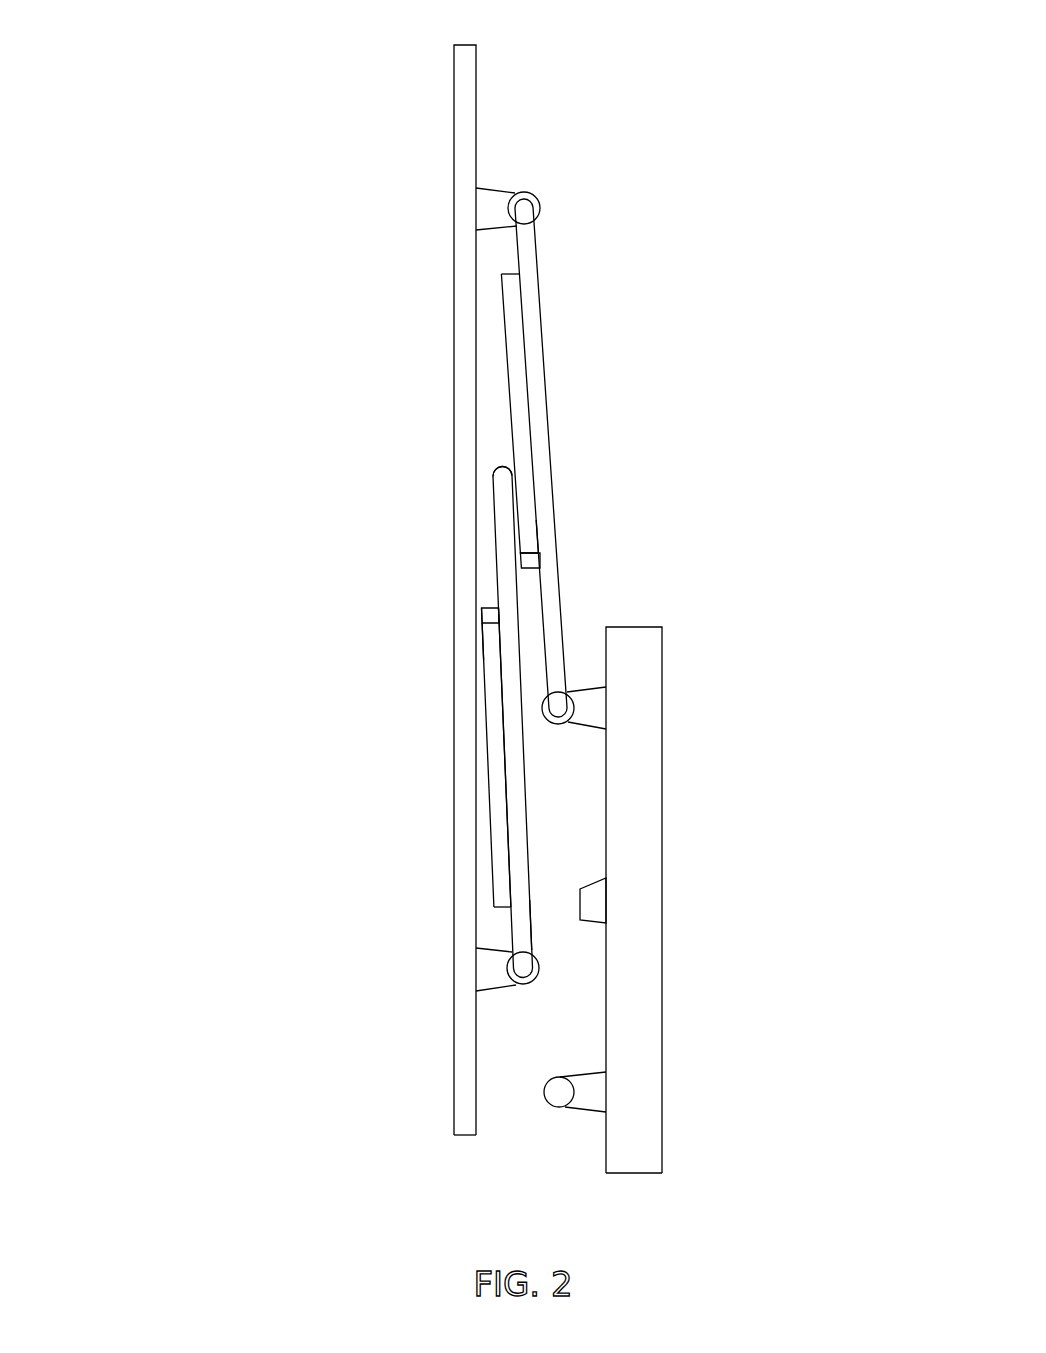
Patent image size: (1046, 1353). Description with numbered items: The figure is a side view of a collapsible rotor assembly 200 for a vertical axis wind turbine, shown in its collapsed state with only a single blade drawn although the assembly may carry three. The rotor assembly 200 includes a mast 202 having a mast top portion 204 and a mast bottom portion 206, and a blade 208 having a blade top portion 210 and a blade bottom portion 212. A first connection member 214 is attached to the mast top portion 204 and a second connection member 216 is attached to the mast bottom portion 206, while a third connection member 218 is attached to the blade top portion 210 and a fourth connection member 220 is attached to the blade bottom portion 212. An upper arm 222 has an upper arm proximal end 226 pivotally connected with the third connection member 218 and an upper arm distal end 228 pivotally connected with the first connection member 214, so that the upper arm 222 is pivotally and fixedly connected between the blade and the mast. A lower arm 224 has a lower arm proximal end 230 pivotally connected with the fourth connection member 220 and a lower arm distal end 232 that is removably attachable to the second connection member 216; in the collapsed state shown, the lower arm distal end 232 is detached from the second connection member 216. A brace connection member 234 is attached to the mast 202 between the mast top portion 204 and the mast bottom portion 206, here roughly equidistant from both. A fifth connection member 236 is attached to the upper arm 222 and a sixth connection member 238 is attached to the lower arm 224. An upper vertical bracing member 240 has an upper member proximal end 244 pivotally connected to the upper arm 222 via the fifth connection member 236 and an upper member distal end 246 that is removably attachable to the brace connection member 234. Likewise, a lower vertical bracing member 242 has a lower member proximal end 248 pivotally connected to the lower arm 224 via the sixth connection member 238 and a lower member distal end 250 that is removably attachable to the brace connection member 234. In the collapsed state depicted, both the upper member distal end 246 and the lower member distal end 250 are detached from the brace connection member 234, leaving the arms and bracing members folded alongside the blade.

The collapsible rotor assembly 200 is at (236, 50).
The mast 202 is at (675, 995).
The mast top portion 204 is at (653, 657).
The mast bottom portion 206 is at (637, 1135).
The blade 208 is at (436, 220).
The blade top portion 210 is at (465, 126).
The blade bottom portion 212 is at (465, 1093).
The first connection member 214 is at (588, 703).
The second connection member 216 is at (559, 1092).
The third connection member 218 is at (503, 200).
The fourth connection member 220 is at (493, 975).
The upper arm 222 is at (540, 433).
The lower arm 224 is at (524, 814).
The upper arm proximal end 226 is at (528, 232).
The upper arm distal end 228 is at (558, 688).
The lower arm proximal end 230 is at (522, 940).
The lower arm distal end 232 is at (503, 492).
The brace connection member 234 is at (594, 900).
The fifth connection member 236 is at (528, 563).
The sixth connection member 238 is at (490, 615).
The upper vertical bracing member 240 is at (518, 393).
The lower vertical bracing member 242 is at (495, 797).
The upper member proximal end 244 is at (527, 537).
The upper member distal end 246 is at (510, 287).
The lower member proximal end 248 is at (490, 638).
The lower member distal end 250 is at (503, 884).